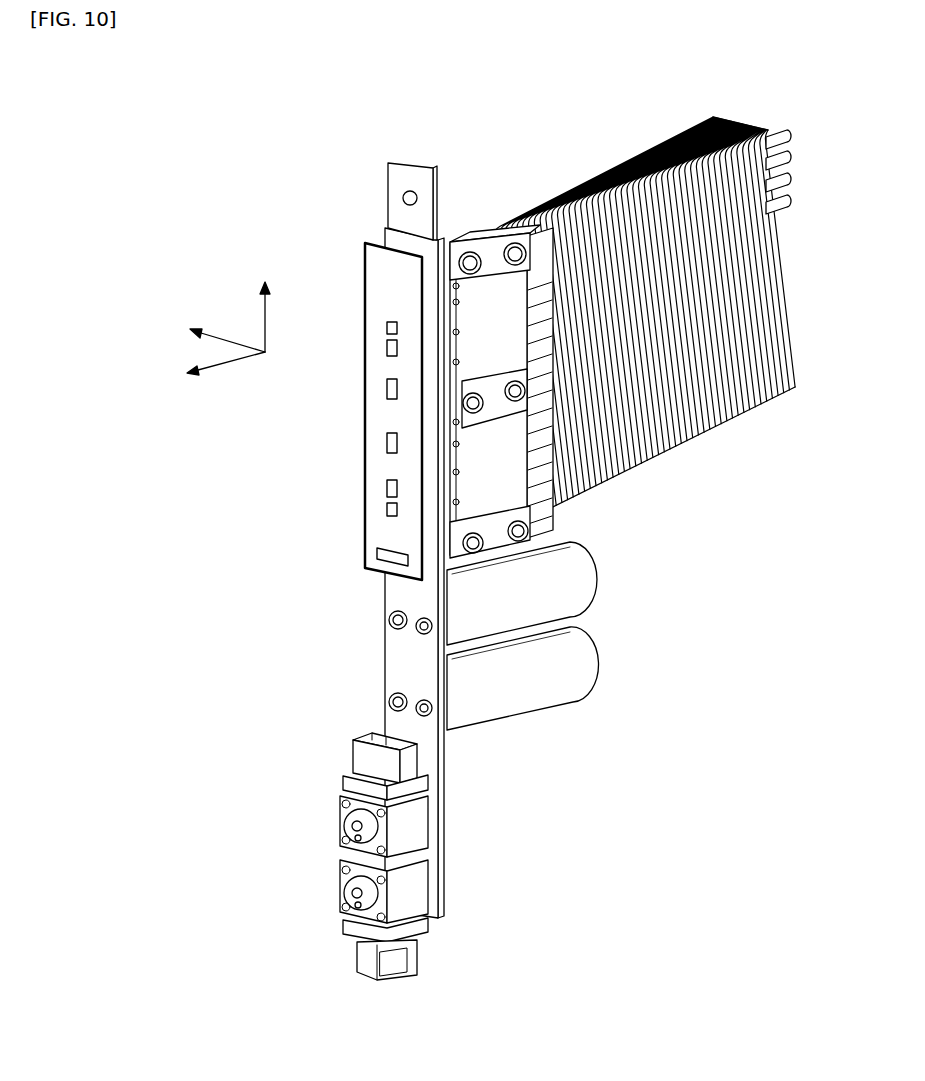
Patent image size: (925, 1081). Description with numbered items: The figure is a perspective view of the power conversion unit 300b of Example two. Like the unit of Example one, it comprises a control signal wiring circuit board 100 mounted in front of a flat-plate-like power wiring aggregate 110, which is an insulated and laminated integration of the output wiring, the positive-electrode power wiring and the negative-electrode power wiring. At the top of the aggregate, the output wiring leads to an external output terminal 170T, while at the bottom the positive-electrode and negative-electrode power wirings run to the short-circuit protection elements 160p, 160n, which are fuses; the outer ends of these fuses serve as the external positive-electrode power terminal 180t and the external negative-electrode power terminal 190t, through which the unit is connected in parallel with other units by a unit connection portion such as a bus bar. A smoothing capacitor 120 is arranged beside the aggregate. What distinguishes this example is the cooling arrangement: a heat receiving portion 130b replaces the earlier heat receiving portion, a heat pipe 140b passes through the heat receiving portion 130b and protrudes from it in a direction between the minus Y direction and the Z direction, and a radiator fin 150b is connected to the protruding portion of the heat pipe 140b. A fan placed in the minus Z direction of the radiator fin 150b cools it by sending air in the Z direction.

The power conversion unit 300b is at (228, 163).
The external output terminal 170T is at (410, 191).
The heat receiving portion 130b is at (460, 236).
The control signal wiring circuit board 100 is at (363, 417).
The power wiring aggregate 110 is at (387, 662).
The smoothing capacitor 120 is at (598, 585).
The radiator fin 150b is at (693, 440).
The heat pipe 140b is at (542, 480).
The positive-electrode side short-circuit protection element 160p is at (386, 795).
The negative-electrode side short-circuit protection element 160n is at (386, 920).
The external positive-electrode power terminal 180t is at (340, 832).
The external negative-electrode power terminal 190t is at (340, 897).